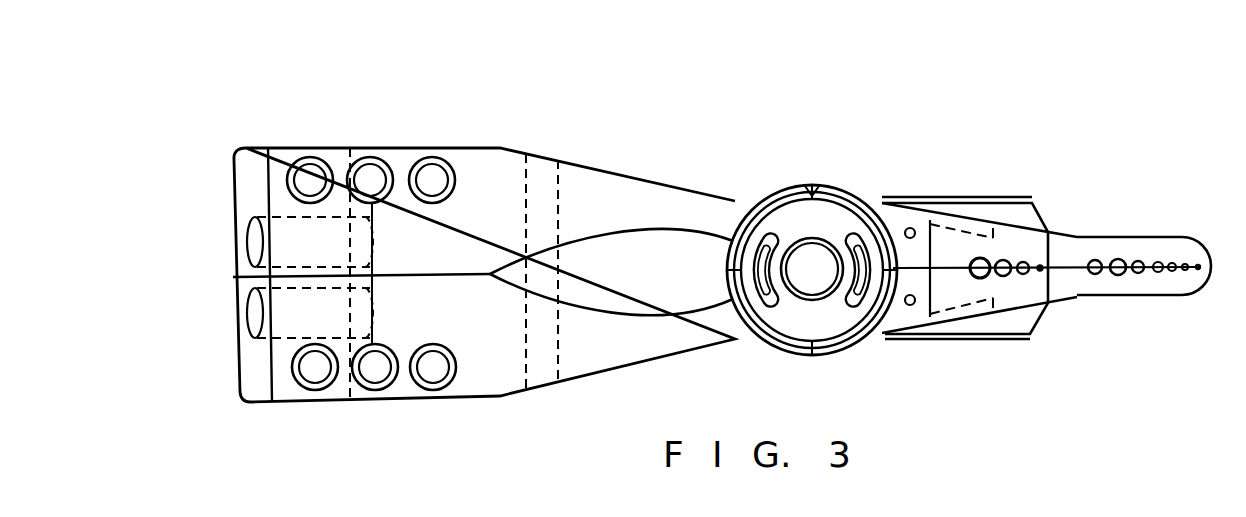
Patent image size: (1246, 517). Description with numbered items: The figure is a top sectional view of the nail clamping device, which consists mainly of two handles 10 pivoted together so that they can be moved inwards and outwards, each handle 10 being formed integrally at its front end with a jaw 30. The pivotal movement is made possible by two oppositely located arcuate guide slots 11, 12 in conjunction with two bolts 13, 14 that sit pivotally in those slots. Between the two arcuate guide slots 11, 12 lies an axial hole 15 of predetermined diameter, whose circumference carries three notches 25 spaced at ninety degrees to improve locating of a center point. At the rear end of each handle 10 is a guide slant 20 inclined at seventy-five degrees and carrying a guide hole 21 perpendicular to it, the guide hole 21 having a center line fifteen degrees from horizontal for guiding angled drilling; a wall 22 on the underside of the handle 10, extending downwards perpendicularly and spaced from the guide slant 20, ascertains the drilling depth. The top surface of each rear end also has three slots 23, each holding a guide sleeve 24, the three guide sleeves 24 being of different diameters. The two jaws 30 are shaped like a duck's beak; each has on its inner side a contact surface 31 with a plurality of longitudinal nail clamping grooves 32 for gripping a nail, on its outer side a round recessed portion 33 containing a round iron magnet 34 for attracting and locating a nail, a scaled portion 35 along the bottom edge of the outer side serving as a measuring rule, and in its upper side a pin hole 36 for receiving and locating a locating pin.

The handle 10 is at (432, 135).
The arcuate guide slot 11 is at (866, 215).
The arcuate guide slot 12 is at (743, 218).
The bolt 13 is at (876, 225).
The bolt 14 is at (765, 225).
The axial hole 15 is at (814, 268).
The guide slant 20 is at (250, 192).
The guide hole 21 is at (260, 327).
The wall 22 is at (542, 355).
The slot 23 is at (312, 180).
The guide sleeve 24 is at (302, 160).
The notch 25 is at (810, 188).
The jaw 30 is at (1063, 188).
The contact surface 31 is at (1067, 263).
The nail clamping groove 32 is at (1095, 262).
The recessed portion 33 is at (1017, 308).
The round magnet 34 is at (955, 312).
The scaled portion 35 is at (1035, 315).
The pin hole 36 is at (912, 230).